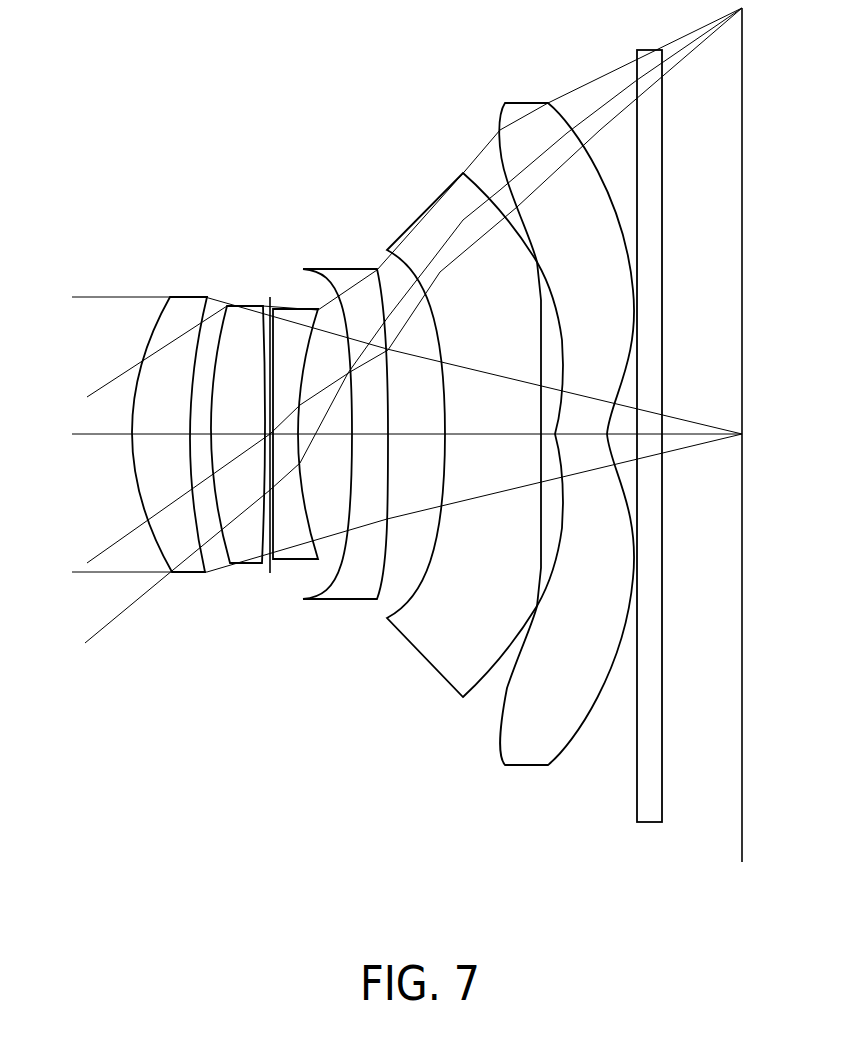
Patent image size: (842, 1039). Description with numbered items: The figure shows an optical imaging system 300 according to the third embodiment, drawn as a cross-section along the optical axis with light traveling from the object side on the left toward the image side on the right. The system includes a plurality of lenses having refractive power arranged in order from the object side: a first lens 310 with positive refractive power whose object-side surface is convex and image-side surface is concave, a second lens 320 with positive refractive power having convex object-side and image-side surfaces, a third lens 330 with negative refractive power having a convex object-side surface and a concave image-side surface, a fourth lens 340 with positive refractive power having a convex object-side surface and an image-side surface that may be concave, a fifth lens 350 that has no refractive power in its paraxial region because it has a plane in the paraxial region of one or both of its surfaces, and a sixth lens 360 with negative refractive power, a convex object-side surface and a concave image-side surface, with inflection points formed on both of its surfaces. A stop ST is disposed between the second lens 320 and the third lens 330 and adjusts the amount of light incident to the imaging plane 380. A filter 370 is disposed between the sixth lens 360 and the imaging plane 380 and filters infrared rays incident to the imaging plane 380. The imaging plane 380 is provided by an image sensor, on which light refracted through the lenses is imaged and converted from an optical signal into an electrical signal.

The optical imaging system 300 is at (393, 140).
The first lens 310 is at (185, 573).
The second lens 320 is at (243, 564).
The third lens 330 is at (288, 560).
The fourth lens 340 is at (345, 600).
The fifth lens 350 is at (423, 660).
The sixth lens 360 is at (523, 767).
The filter 370 is at (648, 823).
The imaging plane 380 is at (741, 853).
The stop ST is at (266, 296).